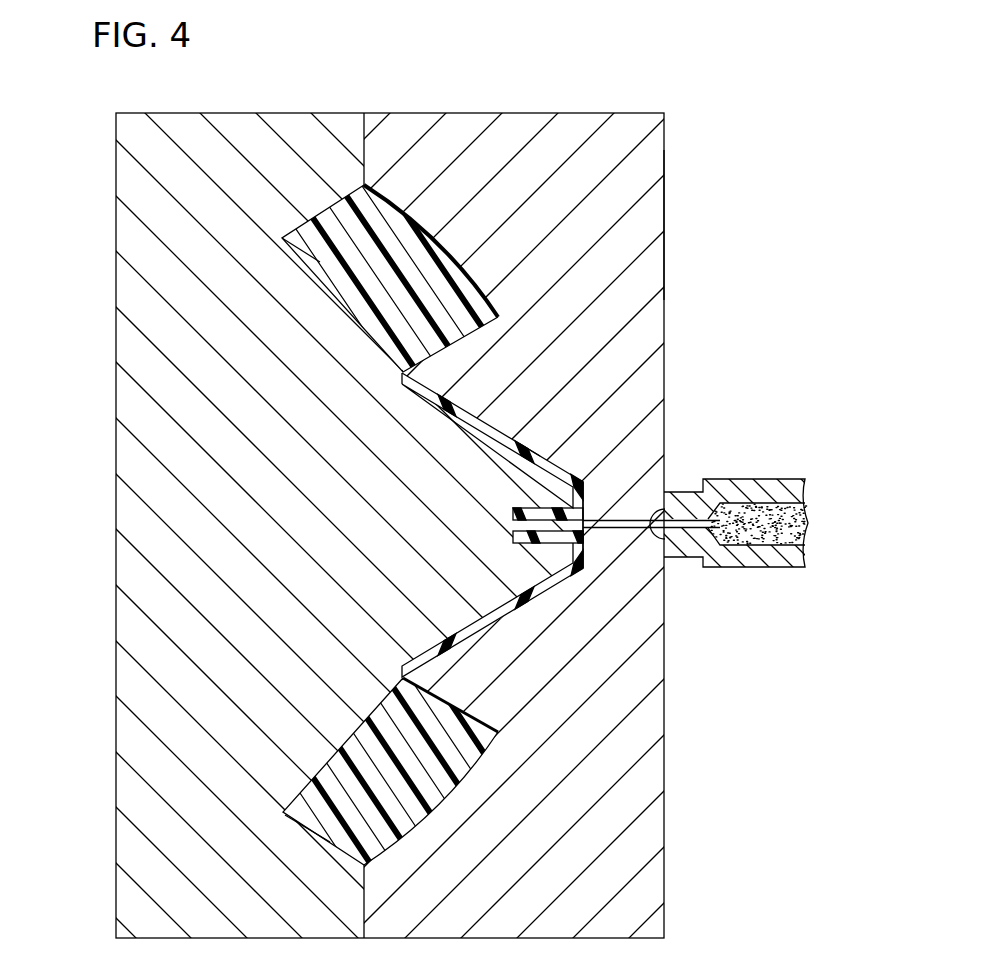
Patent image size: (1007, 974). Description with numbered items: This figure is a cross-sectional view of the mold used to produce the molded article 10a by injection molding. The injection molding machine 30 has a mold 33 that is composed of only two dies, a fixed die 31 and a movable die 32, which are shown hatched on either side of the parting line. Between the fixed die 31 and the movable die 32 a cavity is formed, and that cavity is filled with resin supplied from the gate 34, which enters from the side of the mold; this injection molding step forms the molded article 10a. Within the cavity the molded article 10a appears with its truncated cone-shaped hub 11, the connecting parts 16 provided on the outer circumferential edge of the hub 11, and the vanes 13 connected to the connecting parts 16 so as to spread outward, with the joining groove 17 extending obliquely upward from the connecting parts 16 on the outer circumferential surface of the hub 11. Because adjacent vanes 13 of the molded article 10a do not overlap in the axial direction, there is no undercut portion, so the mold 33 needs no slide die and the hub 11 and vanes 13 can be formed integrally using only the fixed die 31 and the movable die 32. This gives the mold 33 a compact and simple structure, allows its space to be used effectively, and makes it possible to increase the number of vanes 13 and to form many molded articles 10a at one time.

The injection molding machine 30 is at (734, 125).
The fixed die 31 is at (666, 319).
The movable die 32 is at (116, 330).
The mold 33 is at (666, 216).
The gate 34 is at (586, 528).
The vanes 13 is at (426, 224).
The connecting parts 16 is at (402, 380).
The joining groove 17 is at (462, 410).
The hub 11 is at (537, 448).
The molded article 10a is at (563, 588).